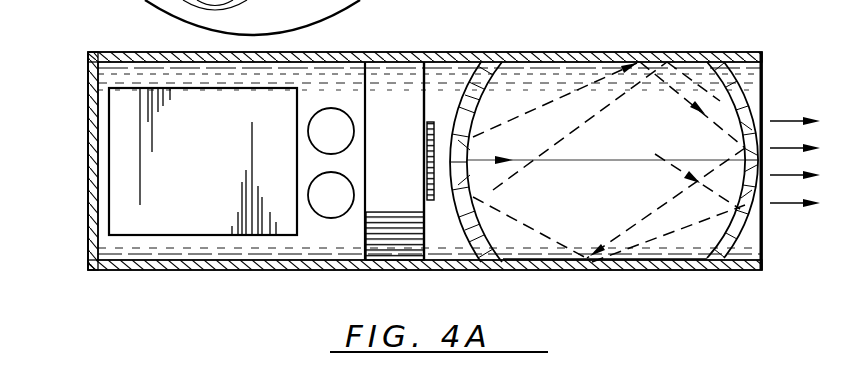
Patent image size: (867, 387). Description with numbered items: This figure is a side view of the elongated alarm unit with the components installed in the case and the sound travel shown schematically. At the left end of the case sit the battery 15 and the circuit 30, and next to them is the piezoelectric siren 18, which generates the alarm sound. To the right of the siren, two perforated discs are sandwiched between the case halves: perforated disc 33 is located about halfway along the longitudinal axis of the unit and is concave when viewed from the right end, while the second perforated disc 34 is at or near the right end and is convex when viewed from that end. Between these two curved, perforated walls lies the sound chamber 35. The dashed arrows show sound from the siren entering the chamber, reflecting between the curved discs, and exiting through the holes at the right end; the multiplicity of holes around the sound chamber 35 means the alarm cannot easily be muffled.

The battery 15 is at (120, 125).
The piezoelectric siren 18 is at (403, 80).
The circuit 30 is at (125, 204).
The perforated disc 33 is at (484, 66).
The perforated disc 34 is at (742, 94).
The sound chamber 35 is at (688, 238).